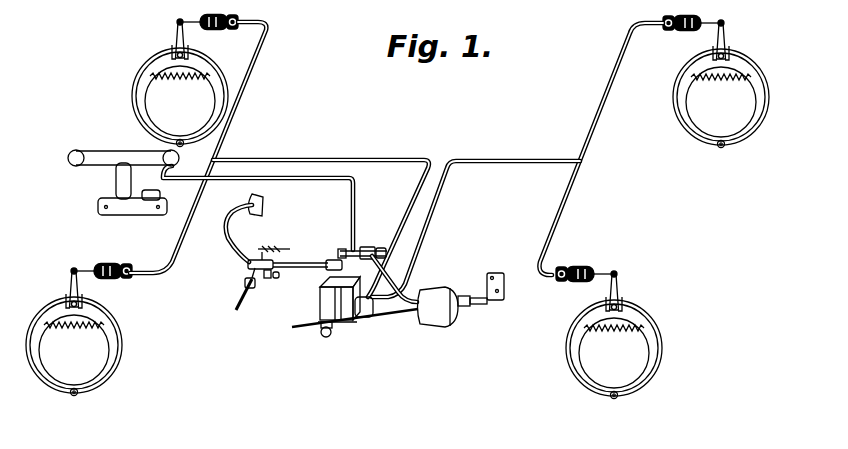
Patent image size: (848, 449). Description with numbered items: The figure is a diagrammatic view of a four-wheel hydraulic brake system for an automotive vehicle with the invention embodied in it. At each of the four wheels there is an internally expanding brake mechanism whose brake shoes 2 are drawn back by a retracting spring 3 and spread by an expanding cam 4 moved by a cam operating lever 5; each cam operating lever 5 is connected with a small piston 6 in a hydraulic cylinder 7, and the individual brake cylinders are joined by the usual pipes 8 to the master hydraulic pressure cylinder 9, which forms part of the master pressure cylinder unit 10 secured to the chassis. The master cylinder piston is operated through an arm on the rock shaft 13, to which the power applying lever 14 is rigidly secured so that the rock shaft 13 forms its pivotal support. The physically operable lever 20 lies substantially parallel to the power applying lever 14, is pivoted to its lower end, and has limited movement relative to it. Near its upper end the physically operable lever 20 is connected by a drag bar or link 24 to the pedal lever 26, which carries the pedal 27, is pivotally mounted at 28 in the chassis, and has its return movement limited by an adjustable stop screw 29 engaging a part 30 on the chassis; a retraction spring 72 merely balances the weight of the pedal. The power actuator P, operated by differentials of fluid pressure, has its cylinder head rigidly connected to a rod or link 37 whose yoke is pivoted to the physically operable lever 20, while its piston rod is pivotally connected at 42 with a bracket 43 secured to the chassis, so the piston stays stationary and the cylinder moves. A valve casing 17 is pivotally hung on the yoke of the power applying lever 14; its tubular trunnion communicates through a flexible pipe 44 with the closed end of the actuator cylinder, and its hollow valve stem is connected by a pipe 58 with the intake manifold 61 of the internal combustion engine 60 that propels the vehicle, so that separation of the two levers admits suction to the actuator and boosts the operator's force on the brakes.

The brake shoes 2 is at (150, 123).
The retracting spring 3 is at (173, 78).
The expanding cam 4 is at (170, 60).
The cam operating lever 5 is at (176, 34).
The small piston 6 is at (212, 31).
The hydraulic cylinder 7 is at (233, 30).
The pipes 8 is at (143, 268).
The master hydraulic pressure cylinder 9 is at (362, 318).
The master pressure cylinder unit 10 is at (352, 312).
The rock shaft 13 is at (320, 306).
The power applying lever 14 is at (333, 337).
The valve casing 17 is at (367, 250).
The physically operable lever 20 is at (337, 277).
The drag bar or link 24 is at (305, 262).
The pedal lever 26 is at (236, 242).
The pedal 27 is at (265, 203).
The pedal lever pivot 28 is at (246, 289).
The adjustable stop screw 29 is at (277, 280).
The stop part 30 is at (266, 281).
The rod or link 37 is at (400, 313).
The piston rod pivot connection 42 is at (490, 303).
The bracket 43 is at (504, 290).
The flexible pipe 44 is at (405, 277).
The pipe 58 is at (354, 196).
The internal combustion engine 60 is at (84, 153).
The intake manifold 61 is at (113, 176).
The retraction spring 72 is at (278, 247).
The power actuator P is at (437, 326).